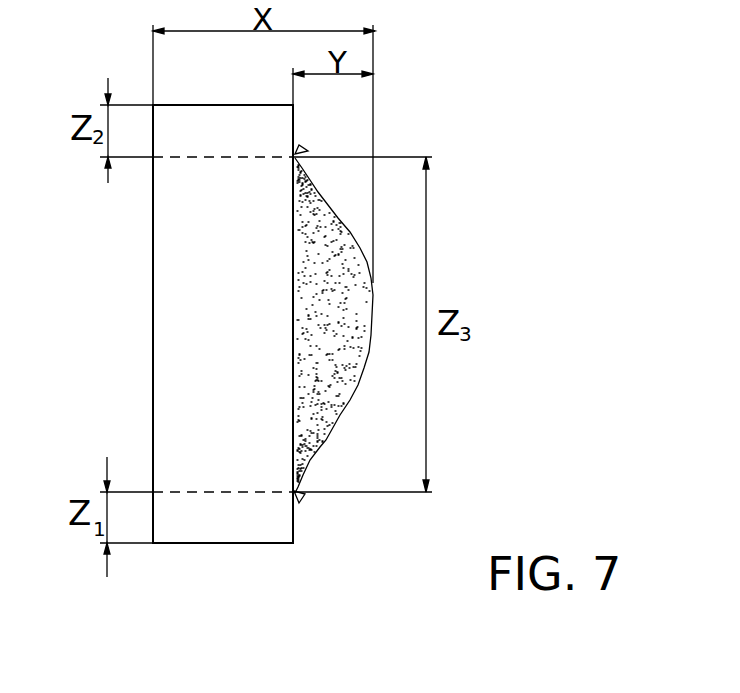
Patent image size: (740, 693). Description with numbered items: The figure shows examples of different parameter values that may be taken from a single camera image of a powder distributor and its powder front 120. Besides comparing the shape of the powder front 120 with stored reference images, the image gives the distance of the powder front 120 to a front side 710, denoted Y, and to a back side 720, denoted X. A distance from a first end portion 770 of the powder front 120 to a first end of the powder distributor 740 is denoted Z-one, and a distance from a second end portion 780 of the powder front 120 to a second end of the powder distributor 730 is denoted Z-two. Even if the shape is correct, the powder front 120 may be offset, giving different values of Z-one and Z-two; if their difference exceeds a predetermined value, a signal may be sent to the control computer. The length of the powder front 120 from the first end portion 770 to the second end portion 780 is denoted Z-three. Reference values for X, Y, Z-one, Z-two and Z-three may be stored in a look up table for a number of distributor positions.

The powder front 120 is at (345, 230).
The front side 710 is at (293, 122).
The back side 720 is at (152, 335).
The second end of the powder distributor 730 is at (192, 105).
The first end of the powder distributor 740 is at (243, 543).
The first end portion of the powder front 770 is at (304, 497).
The second end portion of the powder front 780 is at (303, 148).